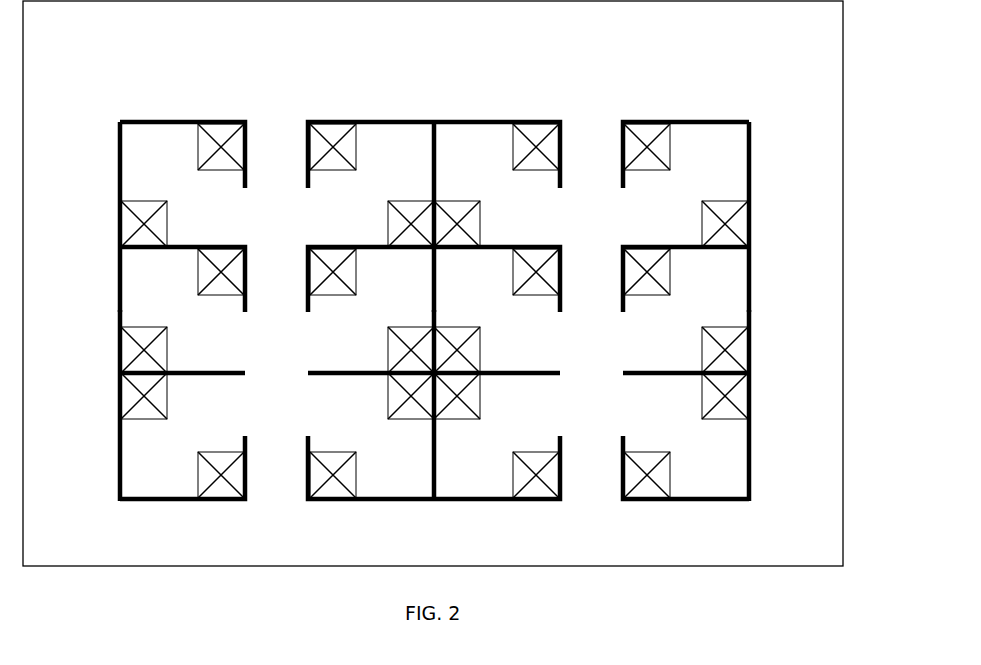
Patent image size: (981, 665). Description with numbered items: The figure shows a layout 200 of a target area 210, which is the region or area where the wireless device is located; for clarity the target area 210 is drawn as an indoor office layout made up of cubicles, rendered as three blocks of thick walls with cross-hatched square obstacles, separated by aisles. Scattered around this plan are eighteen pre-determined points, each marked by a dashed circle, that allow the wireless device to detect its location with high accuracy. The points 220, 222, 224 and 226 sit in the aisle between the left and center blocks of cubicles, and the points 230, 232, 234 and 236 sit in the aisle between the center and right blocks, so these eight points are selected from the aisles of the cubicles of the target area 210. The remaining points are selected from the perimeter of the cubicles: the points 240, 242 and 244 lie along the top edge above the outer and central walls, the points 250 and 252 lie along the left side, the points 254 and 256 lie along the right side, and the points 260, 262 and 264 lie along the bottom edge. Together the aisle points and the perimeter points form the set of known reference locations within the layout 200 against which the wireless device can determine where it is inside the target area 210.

The layout 200 is at (433, 312).
The target area 210 is at (433, 283).
The pre-determined point 220 is at (277, 147).
The pre-determined point 222 is at (277, 256).
The pre-determined point 224 is at (277, 373).
The pre-determined point 226 is at (277, 476).
The pre-determined point 230 is at (591, 147).
The pre-determined point 232 is at (591, 256).
The pre-determined point 234 is at (591, 373).
The pre-determined point 236 is at (591, 476).
The pre-determined point 240 is at (120, 192).
The pre-determined point 242 is at (434, 192).
The pre-determined point 244 is at (748, 192).
The pre-determined point 250 is at (119, 233).
The pre-determined point 252 is at (119, 373).
The pre-determined point 254 is at (750, 233).
The pre-determined point 256 is at (750, 373).
The pre-determined point 260 is at (120, 430).
The pre-determined point 262 is at (434, 430).
The pre-determined point 264 is at (748, 430).